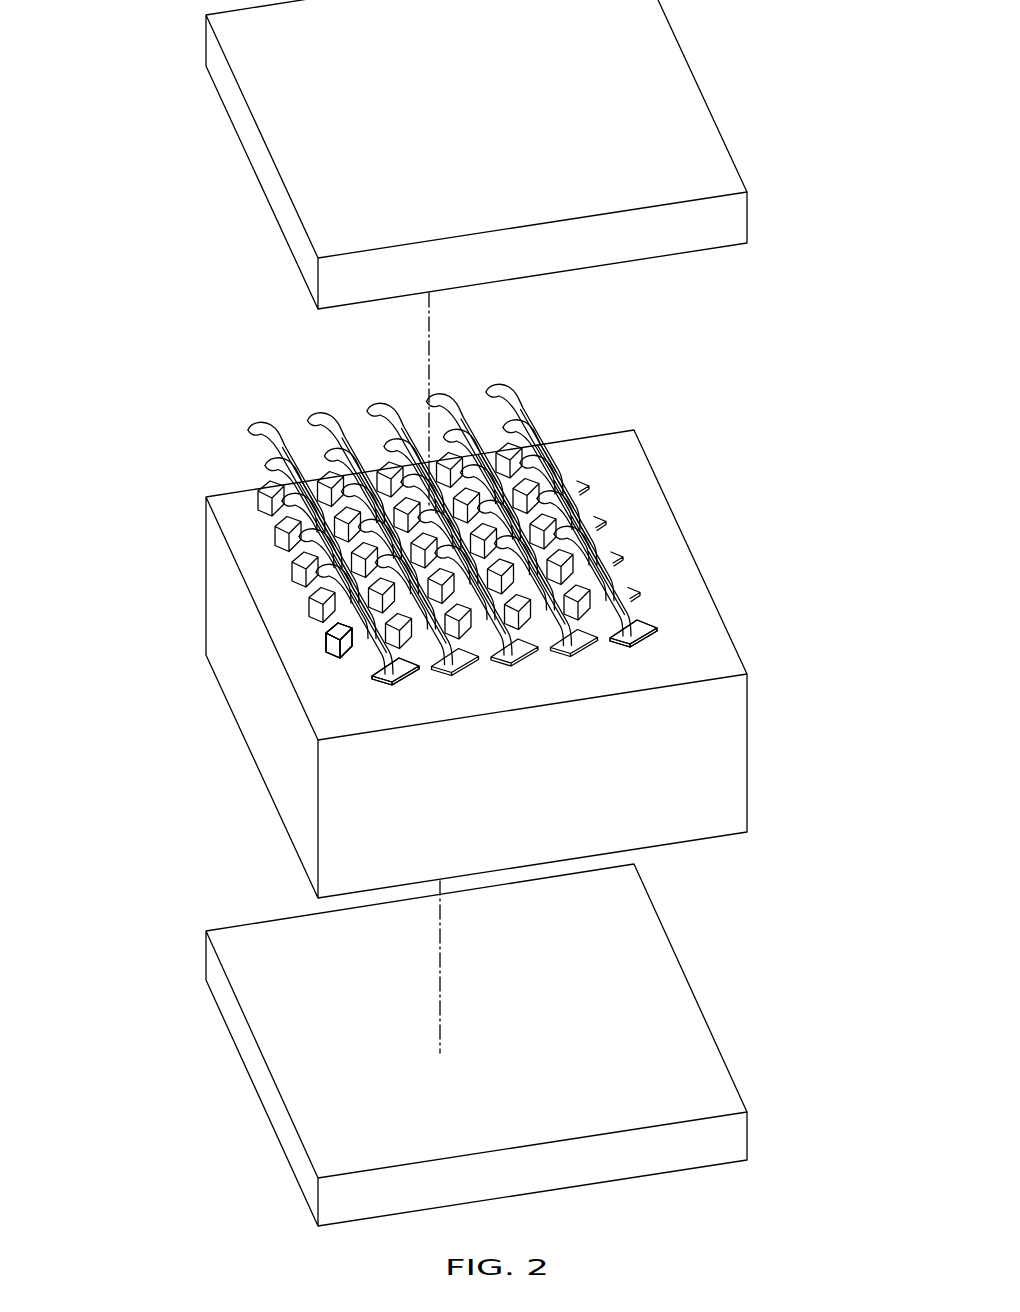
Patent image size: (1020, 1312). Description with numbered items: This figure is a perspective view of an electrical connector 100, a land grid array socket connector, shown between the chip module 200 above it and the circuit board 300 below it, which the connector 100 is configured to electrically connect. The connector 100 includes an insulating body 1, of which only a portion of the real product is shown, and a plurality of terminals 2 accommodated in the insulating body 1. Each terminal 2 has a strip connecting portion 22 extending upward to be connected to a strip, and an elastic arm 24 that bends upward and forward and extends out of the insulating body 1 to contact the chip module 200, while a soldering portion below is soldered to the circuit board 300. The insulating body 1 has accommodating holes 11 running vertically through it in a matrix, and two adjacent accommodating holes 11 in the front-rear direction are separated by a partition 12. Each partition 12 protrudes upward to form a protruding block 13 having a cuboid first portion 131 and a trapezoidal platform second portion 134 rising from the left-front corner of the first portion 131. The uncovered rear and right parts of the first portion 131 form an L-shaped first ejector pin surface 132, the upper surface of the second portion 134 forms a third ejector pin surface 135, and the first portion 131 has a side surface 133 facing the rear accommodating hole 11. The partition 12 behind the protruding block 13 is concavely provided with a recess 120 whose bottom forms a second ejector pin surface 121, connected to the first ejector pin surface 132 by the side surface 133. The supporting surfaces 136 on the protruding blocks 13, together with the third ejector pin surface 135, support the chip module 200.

The insulating body 1 is at (652, 476).
The terminal 2 is at (510, 606).
The accommodating hole 11 is at (638, 625).
The partition 12 is at (603, 630).
The protruding block 13 is at (466, 634).
The strip connecting portion 22 is at (645, 637).
The elastic arm 24 is at (510, 395).
The electrical connector 100 is at (434, 625).
The recess 120 is at (603, 615).
The second ejector pin surface 121 is at (633, 587).
The first portion 131 is at (355, 660).
The first ejector pin surface 132 is at (620, 568).
The side surface 133 is at (357, 655).
The second portion 134 is at (347, 648).
The third ejector pin surface 135 is at (333, 624).
The supporting surface 136 is at (320, 585).
The chip module 200 is at (199, 42).
The circuit board 300 is at (235, 1031).